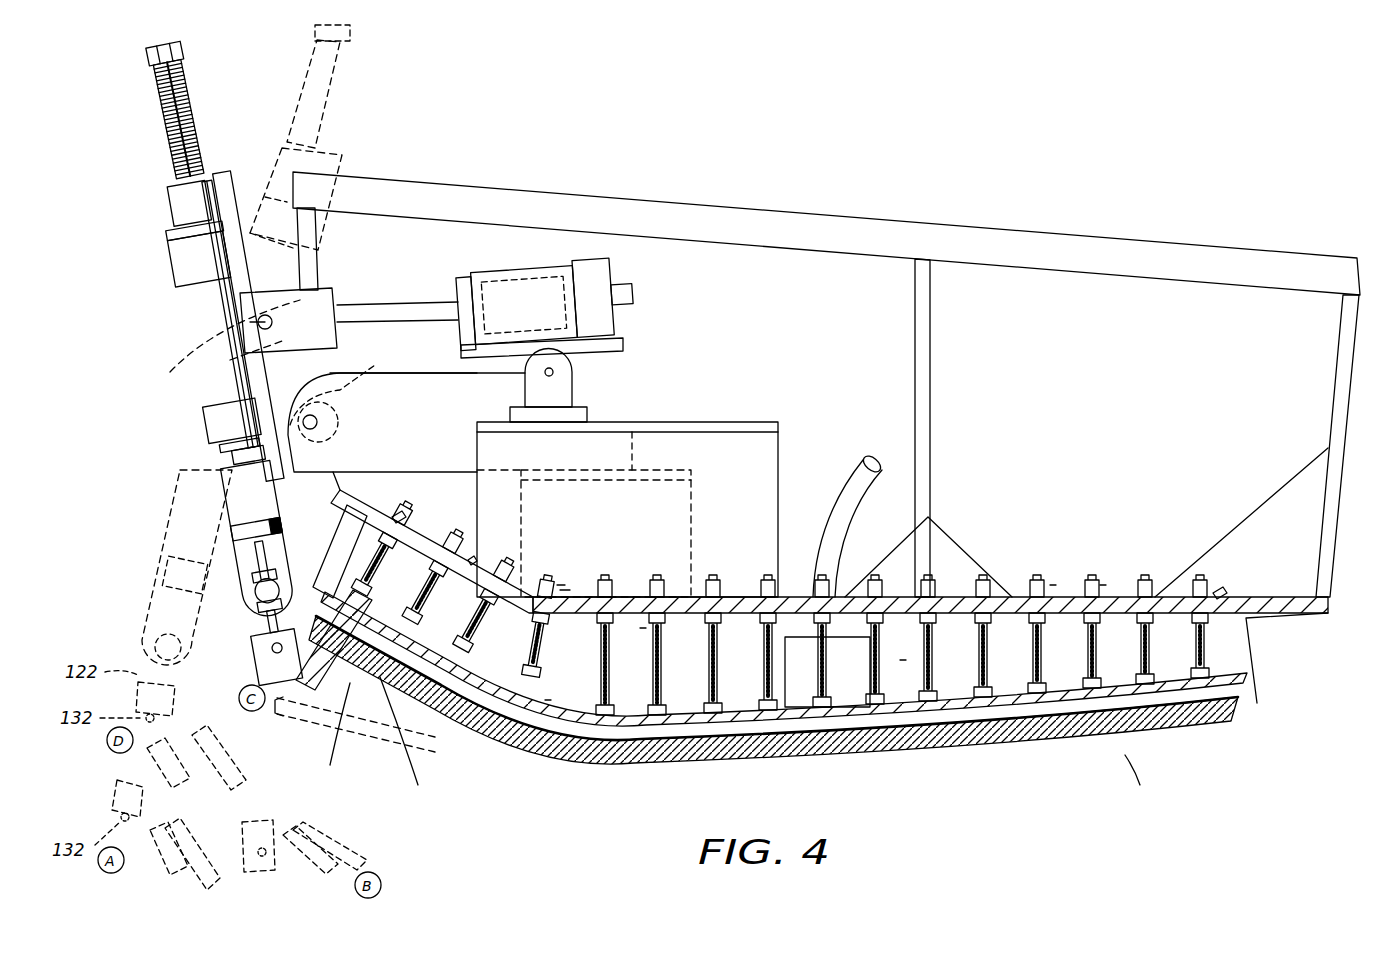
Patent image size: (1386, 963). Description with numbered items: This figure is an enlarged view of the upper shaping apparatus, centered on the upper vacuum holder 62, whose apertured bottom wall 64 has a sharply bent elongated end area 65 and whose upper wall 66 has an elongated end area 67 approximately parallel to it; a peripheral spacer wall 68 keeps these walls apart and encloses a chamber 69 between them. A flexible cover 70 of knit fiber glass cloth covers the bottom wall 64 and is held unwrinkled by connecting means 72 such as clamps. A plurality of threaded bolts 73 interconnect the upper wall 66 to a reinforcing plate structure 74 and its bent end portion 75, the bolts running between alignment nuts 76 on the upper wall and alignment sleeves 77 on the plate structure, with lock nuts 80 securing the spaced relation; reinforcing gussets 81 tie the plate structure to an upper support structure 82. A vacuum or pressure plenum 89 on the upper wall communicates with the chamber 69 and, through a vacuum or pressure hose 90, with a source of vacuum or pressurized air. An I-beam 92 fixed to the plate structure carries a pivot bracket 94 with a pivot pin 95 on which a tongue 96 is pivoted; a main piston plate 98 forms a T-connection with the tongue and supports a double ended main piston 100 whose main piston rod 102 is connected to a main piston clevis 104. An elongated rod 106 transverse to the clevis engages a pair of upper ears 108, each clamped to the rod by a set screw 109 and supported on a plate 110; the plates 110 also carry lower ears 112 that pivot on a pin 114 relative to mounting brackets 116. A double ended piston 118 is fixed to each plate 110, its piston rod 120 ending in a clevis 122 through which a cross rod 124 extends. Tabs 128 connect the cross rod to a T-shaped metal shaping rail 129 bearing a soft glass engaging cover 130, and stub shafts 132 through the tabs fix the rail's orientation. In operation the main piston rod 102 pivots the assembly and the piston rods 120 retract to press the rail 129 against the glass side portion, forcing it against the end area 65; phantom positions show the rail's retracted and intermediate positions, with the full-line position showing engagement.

The upper vacuum holder 62 is at (338, 590).
The apertured bottom wall 64 is at (1020, 745).
The elongated end area 65 is at (425, 660).
The upper wall 66 is at (922, 690).
The elongated end area 67 is at (460, 590).
The peripheral spacer wall 68 is at (1255, 680).
The chamber 69 is at (822, 722).
The flexible cover 70 is at (360, 525).
The connecting means 72 is at (400, 515).
The threaded bolts 73 is at (600, 650).
The reinforcing plate structure 74 is at (587, 595).
The bent end portion 75 is at (445, 552).
The alignment nuts 76 is at (575, 688).
The alignment sleeves 77 is at (635, 625).
The lock nuts 80 is at (1095, 590).
The reinforcing gussets 81 is at (878, 540).
The upper support structure 82 is at (1185, 283).
The vacuum or pressure plenum 89 is at (808, 671).
The vacuum or pressure hose 90 is at (845, 495).
The I-beam 92 is at (780, 440).
The pivot bracket 94 is at (568, 378).
The pivot pin 95 is at (549, 376).
The tongue 96 is at (525, 358).
The main piston plate 98 is at (612, 340).
The double ended main piston 100 is at (552, 285).
The main piston rod 102 is at (440, 300).
The main piston clevis 104 is at (330, 290).
The elongated rod 106 is at (250, 305).
The upper ears 108 is at (220, 340).
The set screw 109 is at (275, 290).
The plates 110 is at (225, 175).
The lower ears 112 is at (347, 394).
The pin 114 is at (318, 422).
The mounting brackets 116 is at (415, 416).
The double ended piston 118 is at (195, 292).
The piston rod 120 is at (215, 460).
The clevis 122 is at (262, 645).
The cross rod 124 is at (245, 657).
The tabs 128 is at (318, 712).
The metal shaping rail 129 is at (178, 893).
The glass engaging cover 130 is at (213, 825).
The stub shafts 132 is at (272, 653).